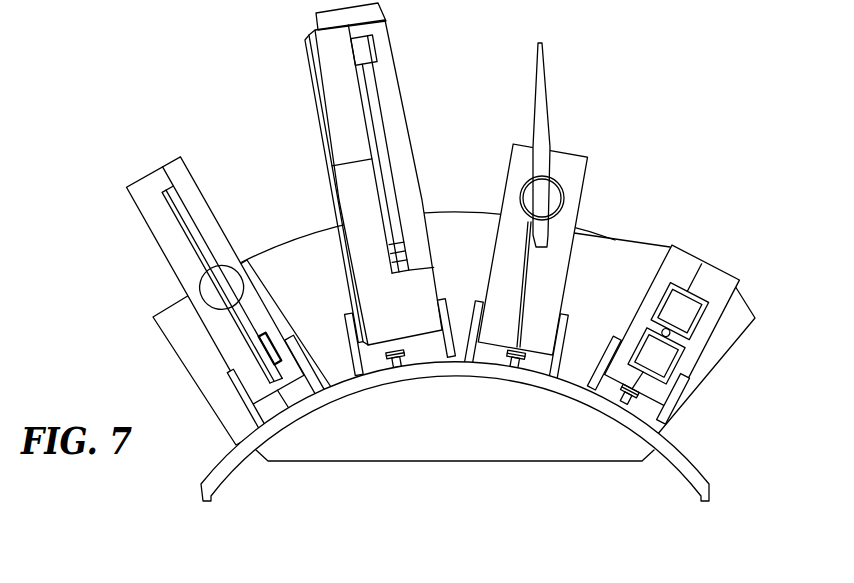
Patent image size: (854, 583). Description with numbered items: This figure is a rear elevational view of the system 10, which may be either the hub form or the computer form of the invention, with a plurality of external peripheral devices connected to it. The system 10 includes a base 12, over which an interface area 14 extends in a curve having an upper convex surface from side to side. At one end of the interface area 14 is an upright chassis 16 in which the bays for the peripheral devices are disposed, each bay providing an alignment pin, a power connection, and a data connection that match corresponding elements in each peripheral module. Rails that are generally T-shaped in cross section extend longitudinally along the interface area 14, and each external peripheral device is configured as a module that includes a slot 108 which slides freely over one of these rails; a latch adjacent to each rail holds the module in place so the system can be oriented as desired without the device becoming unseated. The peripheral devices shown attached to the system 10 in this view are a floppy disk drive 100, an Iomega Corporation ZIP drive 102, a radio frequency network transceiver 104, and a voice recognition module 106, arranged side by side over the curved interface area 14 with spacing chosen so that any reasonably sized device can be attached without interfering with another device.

The system 10 is at (106, 361).
The base 12 is at (471, 434).
The interface area 14 is at (683, 448).
The upright chassis 16 is at (612, 231).
The floppy disk drive 100 is at (215, 215).
The ZIP drive 102 is at (399, 91).
The radio frequency network transceiver 104 is at (588, 157).
The voice recognition module 106 is at (722, 275).
The slot 108 is at (516, 376).